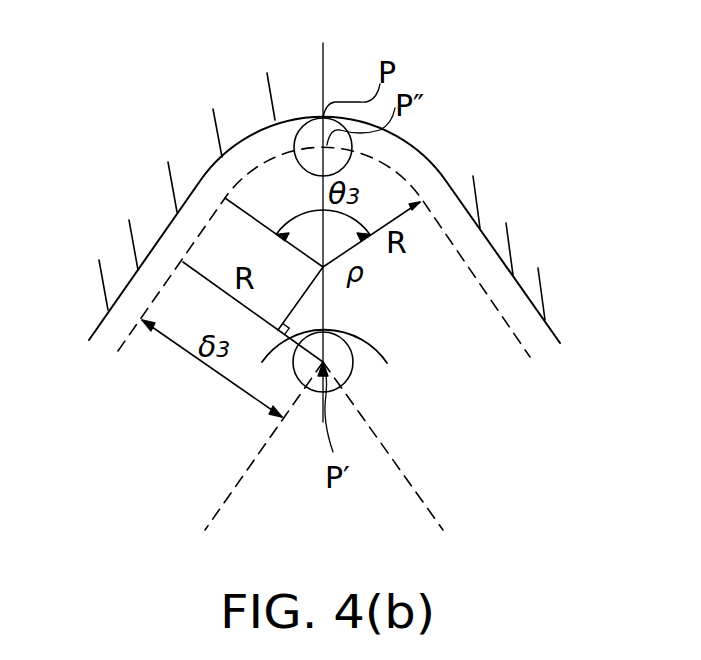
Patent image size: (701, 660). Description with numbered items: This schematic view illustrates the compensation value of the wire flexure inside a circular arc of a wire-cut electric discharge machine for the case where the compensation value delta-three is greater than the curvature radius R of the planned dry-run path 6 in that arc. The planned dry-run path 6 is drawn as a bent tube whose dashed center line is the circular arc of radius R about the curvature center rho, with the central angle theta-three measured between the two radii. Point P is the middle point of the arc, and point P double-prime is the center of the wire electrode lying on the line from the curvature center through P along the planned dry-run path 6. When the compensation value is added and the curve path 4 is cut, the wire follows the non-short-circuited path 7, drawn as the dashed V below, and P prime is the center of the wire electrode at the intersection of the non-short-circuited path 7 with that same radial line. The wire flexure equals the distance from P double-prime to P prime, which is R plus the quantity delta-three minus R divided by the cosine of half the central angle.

The curve path 4 is at (369, 340).
The planned dry-run path 6 is at (408, 182).
The non-short-circuited path 7 is at (403, 473).